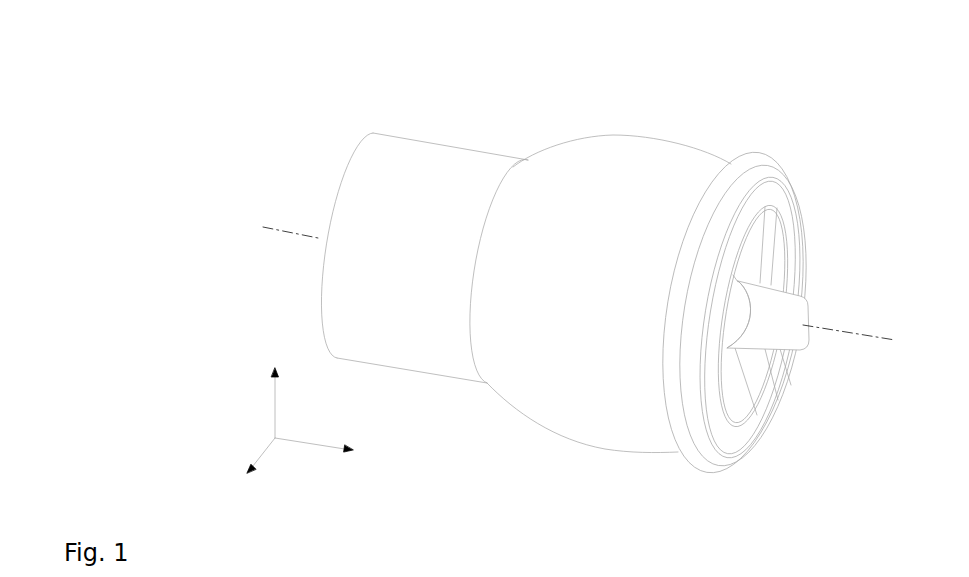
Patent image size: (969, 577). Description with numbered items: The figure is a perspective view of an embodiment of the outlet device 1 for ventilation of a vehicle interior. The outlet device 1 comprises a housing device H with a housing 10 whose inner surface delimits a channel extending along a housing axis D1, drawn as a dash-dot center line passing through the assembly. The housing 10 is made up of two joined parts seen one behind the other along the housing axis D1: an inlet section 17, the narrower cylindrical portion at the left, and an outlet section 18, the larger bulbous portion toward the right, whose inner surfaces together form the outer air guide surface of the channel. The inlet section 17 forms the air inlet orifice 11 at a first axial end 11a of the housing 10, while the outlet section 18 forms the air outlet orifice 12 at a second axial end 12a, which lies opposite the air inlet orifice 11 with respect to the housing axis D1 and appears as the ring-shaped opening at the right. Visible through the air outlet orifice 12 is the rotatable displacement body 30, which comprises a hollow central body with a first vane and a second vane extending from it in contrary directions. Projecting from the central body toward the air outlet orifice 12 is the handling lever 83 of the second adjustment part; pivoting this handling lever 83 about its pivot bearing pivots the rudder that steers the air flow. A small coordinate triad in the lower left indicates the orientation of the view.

The outlet device 1 is at (757, 67).
The housing device H is at (775, 107).
The housing 10 is at (623, 135).
The air inlet orifice 11 is at (295, 173).
The first axial end 11a is at (366, 111).
The air outlet orifice 12 is at (860, 231).
The second axial end 12a is at (857, 154).
The inlet section 17 is at (427, 150).
The outlet section 18 is at (575, 143).
The rotatable displacement body 30 is at (720, 347).
The handling lever 83 is at (792, 333).
The housing axis D1 is at (285, 233).